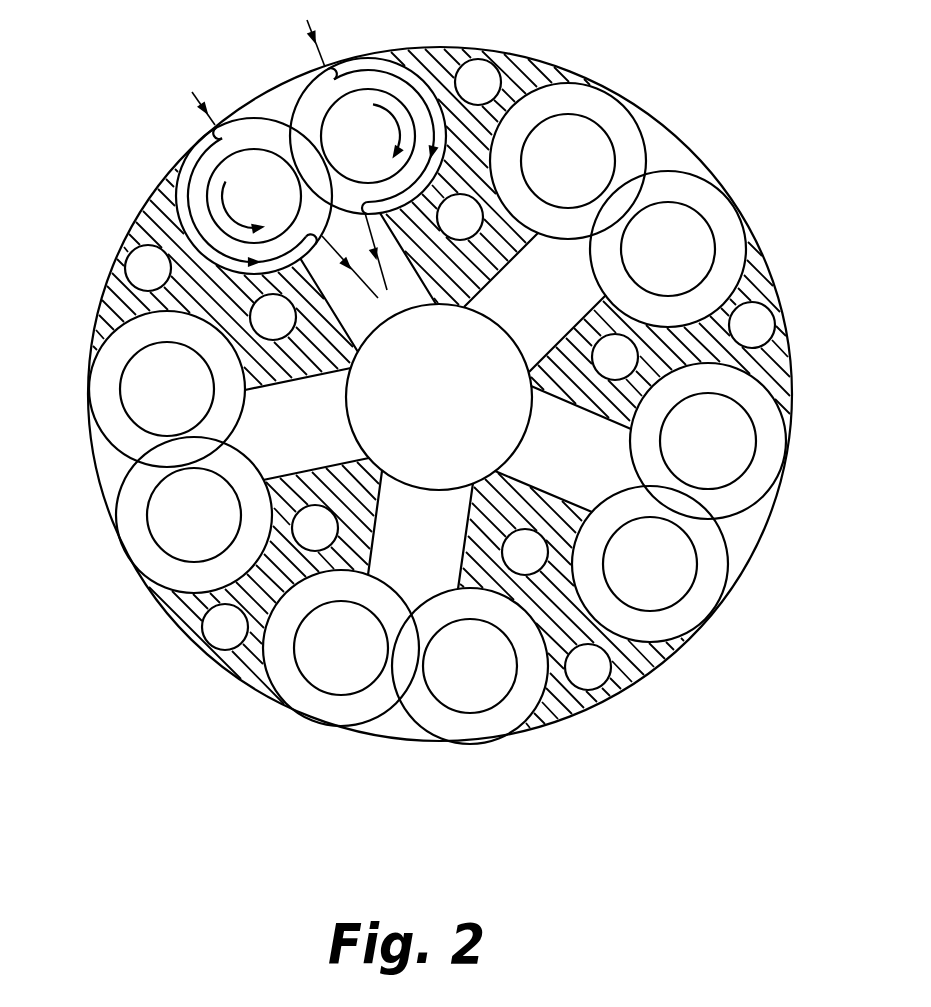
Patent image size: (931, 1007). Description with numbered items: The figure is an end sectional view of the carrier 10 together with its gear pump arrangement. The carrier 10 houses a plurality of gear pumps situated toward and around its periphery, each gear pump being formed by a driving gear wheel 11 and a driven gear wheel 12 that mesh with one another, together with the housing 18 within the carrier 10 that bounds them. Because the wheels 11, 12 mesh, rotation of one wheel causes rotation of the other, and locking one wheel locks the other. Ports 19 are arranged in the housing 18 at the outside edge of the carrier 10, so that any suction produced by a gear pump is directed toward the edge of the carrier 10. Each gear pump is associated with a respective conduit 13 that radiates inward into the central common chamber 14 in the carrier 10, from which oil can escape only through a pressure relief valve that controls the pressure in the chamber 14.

The carrier 10 is at (745, 290).
The driving gear wheel 11 is at (140, 372).
The driven gear wheel 12 is at (178, 522).
The conduit 13 is at (440, 552).
The central common chamber 14 is at (503, 442).
The housing 18 is at (87, 368).
The ports 19 is at (753, 532).